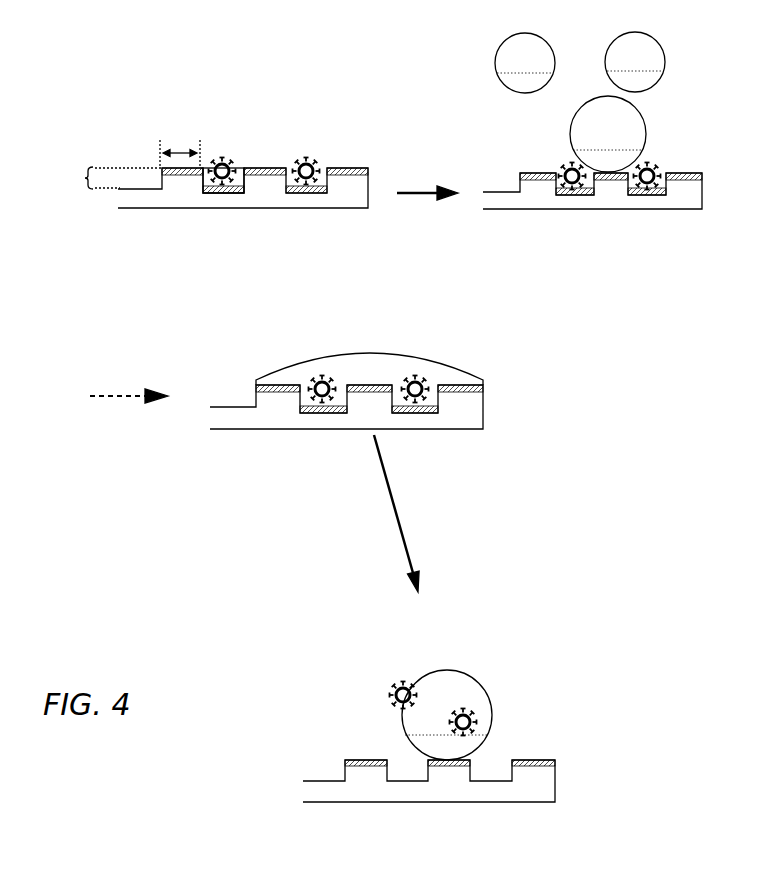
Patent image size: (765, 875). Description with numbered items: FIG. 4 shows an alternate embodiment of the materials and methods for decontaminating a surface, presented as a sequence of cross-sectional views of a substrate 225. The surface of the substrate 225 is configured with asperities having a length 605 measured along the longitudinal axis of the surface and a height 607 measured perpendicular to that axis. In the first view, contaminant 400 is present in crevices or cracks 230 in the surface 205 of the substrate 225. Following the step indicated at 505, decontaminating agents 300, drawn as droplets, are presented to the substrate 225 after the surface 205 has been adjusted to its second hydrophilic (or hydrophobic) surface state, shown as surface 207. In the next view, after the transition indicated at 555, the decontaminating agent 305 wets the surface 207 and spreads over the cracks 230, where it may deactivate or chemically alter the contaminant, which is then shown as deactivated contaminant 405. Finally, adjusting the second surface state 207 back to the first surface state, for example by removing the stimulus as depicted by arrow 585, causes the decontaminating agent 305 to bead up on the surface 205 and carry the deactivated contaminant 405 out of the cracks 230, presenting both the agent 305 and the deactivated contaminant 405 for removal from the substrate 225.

The surface 205 is at (356, 168).
The second hydrophilic surface state 207 is at (683, 172).
The substrate 225 is at (278, 202).
The crevices or cracks 230 is at (208, 196).
The decontaminating agents 300 is at (645, 122).
The decontaminating agent 305 is at (453, 365).
The contaminant 400 is at (305, 160).
The deactivated contaminant 405 is at (320, 386).
The step of adding droplets 505 is at (410, 196).
The step of incubation 555 is at (113, 398).
The arrow 585 is at (388, 487).
The length 605 is at (174, 147).
The height 607 is at (102, 174).